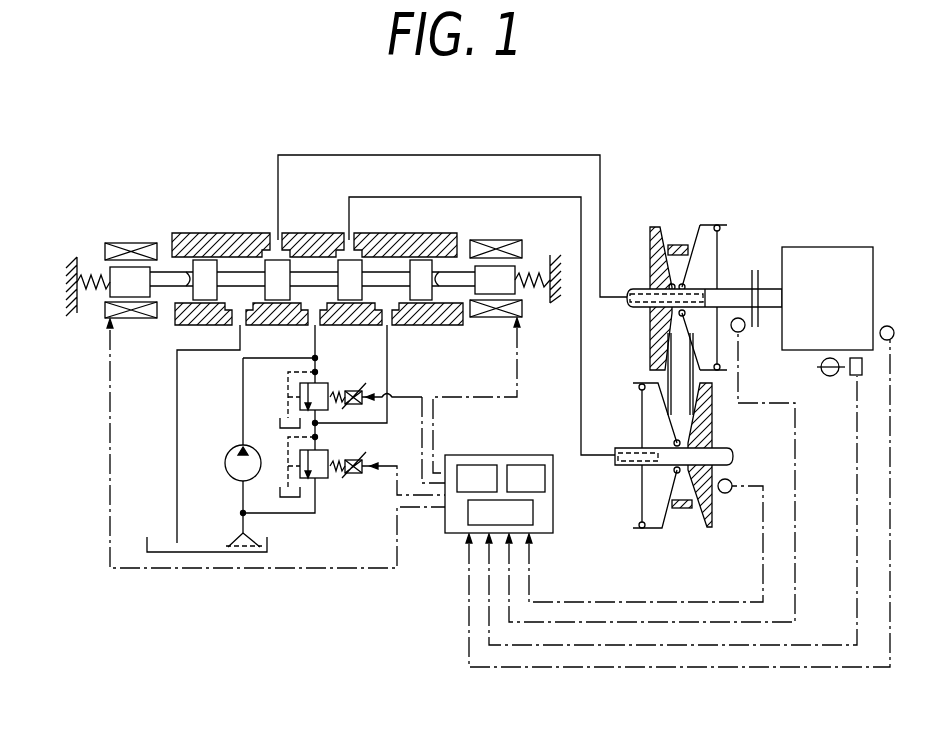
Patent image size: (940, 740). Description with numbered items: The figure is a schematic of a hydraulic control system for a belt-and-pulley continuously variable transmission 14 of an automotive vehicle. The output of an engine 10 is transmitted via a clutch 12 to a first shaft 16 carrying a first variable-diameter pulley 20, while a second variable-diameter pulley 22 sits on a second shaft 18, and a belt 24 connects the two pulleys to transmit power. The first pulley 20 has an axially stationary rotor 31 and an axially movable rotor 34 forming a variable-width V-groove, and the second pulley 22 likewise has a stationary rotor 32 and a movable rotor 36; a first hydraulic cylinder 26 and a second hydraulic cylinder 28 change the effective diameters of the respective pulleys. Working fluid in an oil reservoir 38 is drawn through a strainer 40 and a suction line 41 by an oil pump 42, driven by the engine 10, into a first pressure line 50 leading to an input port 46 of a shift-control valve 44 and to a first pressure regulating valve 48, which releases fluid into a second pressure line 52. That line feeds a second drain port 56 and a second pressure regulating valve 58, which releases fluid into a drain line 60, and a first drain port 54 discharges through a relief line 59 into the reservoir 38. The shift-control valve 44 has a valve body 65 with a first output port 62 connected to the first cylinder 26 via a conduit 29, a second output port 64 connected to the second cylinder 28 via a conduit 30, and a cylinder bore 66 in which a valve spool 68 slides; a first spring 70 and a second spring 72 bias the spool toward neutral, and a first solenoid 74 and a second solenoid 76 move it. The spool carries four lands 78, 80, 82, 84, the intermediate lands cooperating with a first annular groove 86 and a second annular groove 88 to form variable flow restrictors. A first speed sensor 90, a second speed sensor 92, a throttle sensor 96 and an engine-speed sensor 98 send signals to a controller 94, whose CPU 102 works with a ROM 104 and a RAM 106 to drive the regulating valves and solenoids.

The engine 10 is at (843, 247).
The clutch 12 is at (758, 272).
The continuously variable transmission 14 is at (717, 168).
The first shaft 16 is at (640, 289).
The second shaft 18 is at (630, 448).
The first variable-diameter pulley 20 is at (655, 193).
The second variable-diameter pulley 22 is at (627, 366).
The belt 24 is at (683, 509).
The first hydraulic cylinder 26 is at (713, 258).
The second hydraulic cylinder 28 is at (645, 497).
The conduit 29 is at (418, 155).
The conduit 30 is at (543, 198).
The axially stationary rotor 31 is at (652, 240).
The axially stationary rotor 32 is at (708, 528).
The axially movable rotor 34 is at (707, 225).
The axially movable rotor 36 is at (652, 531).
The oil reservoir 38 is at (232, 553).
The strainer 40 is at (233, 534).
The suction line 41 is at (242, 494).
The oil pump 42 is at (227, 458).
The shift-control valve 44 is at (91, 187).
The input port 46 is at (329, 323).
The first pressure regulating valve 48 is at (300, 397).
The first pressure line 50 is at (243, 393).
The second pressure line 52 is at (358, 428).
The first drain port 54 is at (236, 312).
The second drain port 56 is at (391, 313).
The second pressure regulating valve 58 is at (322, 479).
The relief line 59 is at (177, 422).
The drain line 60 is at (281, 514).
The first output port 62 is at (270, 247).
The second output port 64 is at (343, 251).
The valve body 65 is at (190, 233).
The cylinder bore 66 is at (177, 298).
The valve spool 68 is at (448, 293).
The first spring 70 is at (93, 304).
The second spring 72 is at (544, 298).
The first solenoid 74 is at (121, 230).
The second solenoid 76 is at (491, 328).
The land 78 is at (208, 262).
The land 80 is at (263, 268).
The land 82 is at (362, 267).
The land 84 is at (432, 267).
The first annular groove 86 is at (283, 301).
The second annular groove 88 is at (345, 300).
The first speed sensor 90 is at (743, 331).
The second speed sensor 92 is at (731, 481).
The controller 94 is at (497, 456).
The throttle sensor 96 is at (853, 376).
The engine-speed sensor 98 is at (889, 326).
The CPU 102 is at (533, 512).
The ROM 104 is at (468, 466).
The RAM 106 is at (532, 466).